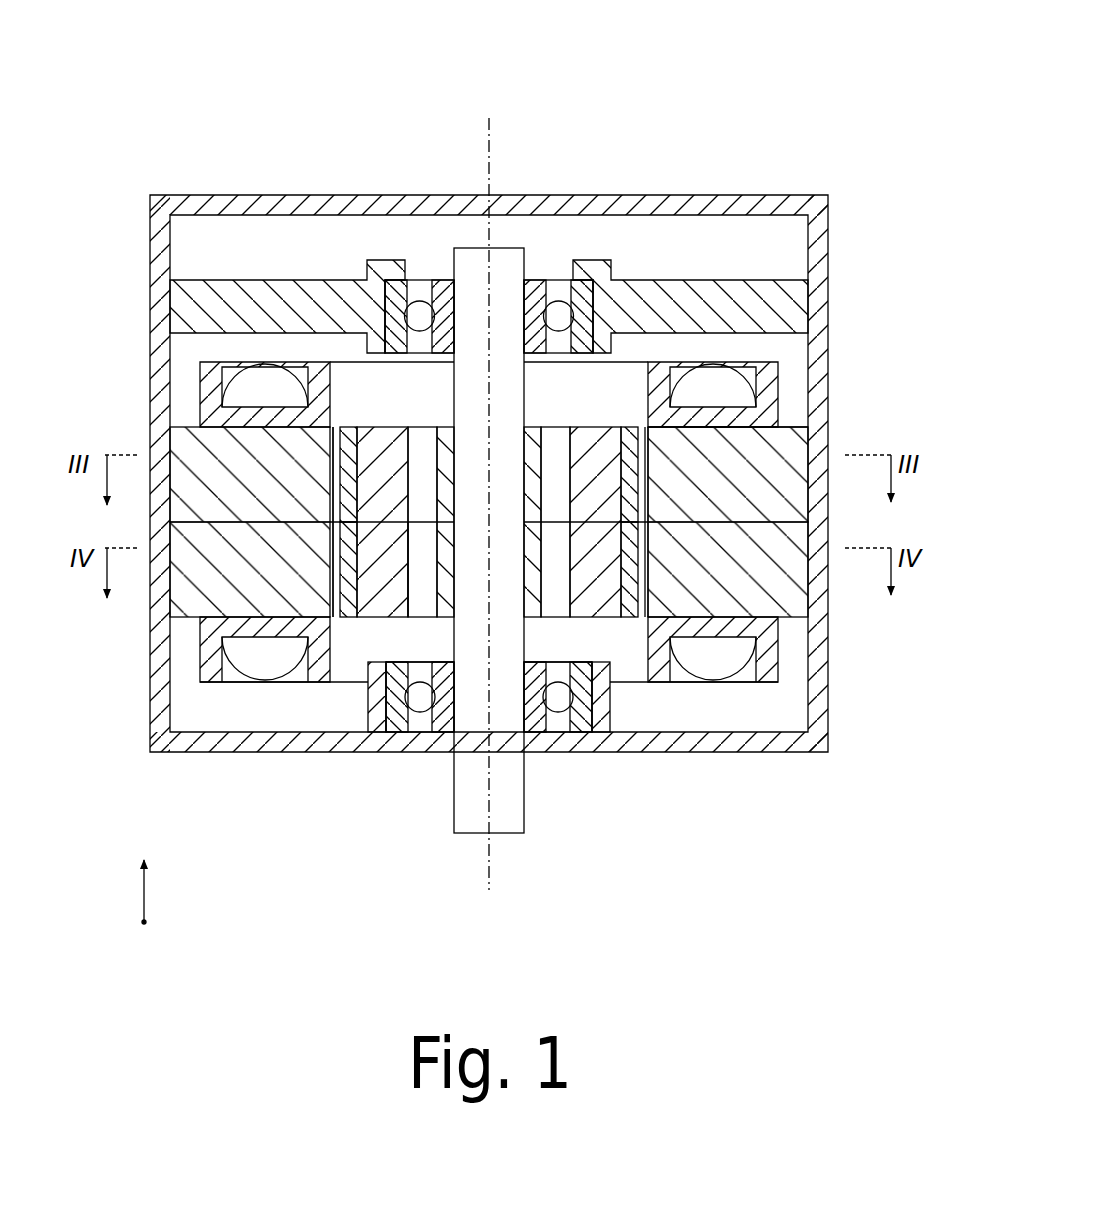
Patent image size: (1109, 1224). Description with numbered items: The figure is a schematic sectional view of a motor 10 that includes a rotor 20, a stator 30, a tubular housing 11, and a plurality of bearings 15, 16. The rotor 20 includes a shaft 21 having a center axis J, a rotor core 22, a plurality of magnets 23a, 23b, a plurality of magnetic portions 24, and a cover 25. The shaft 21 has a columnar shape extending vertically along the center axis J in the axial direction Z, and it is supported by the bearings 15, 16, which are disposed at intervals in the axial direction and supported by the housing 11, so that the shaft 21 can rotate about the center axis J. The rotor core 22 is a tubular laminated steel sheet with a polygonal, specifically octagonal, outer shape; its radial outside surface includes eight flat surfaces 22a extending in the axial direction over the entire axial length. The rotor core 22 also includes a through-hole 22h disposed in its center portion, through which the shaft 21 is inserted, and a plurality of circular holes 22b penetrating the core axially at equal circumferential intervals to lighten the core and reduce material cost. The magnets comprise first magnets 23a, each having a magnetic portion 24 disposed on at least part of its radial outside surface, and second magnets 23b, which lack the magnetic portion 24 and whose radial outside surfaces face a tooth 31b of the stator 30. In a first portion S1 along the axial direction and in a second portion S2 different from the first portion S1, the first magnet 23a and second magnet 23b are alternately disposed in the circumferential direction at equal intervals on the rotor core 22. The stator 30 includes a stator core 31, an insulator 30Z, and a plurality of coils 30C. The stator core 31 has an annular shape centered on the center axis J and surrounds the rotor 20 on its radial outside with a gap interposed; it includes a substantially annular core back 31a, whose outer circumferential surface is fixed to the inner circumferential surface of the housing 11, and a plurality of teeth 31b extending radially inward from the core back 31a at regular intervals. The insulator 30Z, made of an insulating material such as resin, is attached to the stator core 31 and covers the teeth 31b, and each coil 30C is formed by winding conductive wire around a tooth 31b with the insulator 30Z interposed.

The motor 10 is at (778, 87).
The housing 11 is at (788, 195).
The bearing 15 is at (419, 301).
The bearing 16 is at (420, 700).
The rotor 20 is at (567, 509).
The shaft 21 is at (507, 810).
The rotor core 22 is at (612, 654).
The flat surface 22a is at (623, 492).
The hole 22b is at (407, 580).
The through-hole 22h is at (456, 592).
The first magnet 23a is at (345, 427).
The second magnet 23b is at (348, 607).
The magnetic portion 24 is at (322, 468).
The cover 25 is at (655, 442).
The stator 30 is at (550, 411).
The coil 30C is at (740, 358).
The insulator 30Z is at (773, 350).
The stator core 31 is at (538, 400).
The core back 31a is at (805, 442).
The tooth 31b is at (705, 443).
The first portion S1 is at (322, 472).
The second portion S2 is at (322, 560).
The center axis J is at (489, 150).
The axial direction Z is at (146, 871).